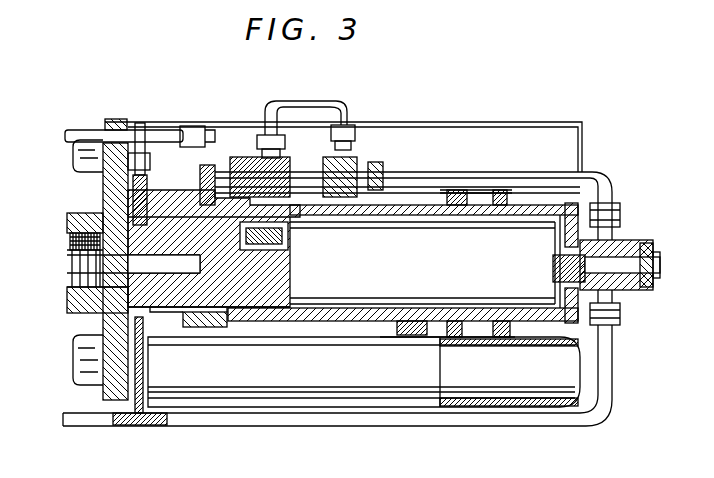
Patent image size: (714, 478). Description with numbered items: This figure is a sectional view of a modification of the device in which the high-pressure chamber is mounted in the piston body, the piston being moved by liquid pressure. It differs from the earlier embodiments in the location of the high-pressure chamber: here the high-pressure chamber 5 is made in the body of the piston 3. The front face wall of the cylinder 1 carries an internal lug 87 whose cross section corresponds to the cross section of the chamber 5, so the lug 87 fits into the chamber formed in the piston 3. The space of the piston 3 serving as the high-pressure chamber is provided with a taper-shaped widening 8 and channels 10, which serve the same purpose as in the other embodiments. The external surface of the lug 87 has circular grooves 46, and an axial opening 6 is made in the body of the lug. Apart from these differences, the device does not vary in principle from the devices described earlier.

The cylinder 1 is at (327, 325).
The piston 3 is at (257, 297).
The high-pressure chamber 5 is at (178, 275).
The axial opening 6 is at (110, 267).
The taper-shaped widening 8 is at (112, 238).
The channels 10 is at (107, 212).
The circular grooves 46 is at (165, 233).
The internal lug 87 is at (128, 283).